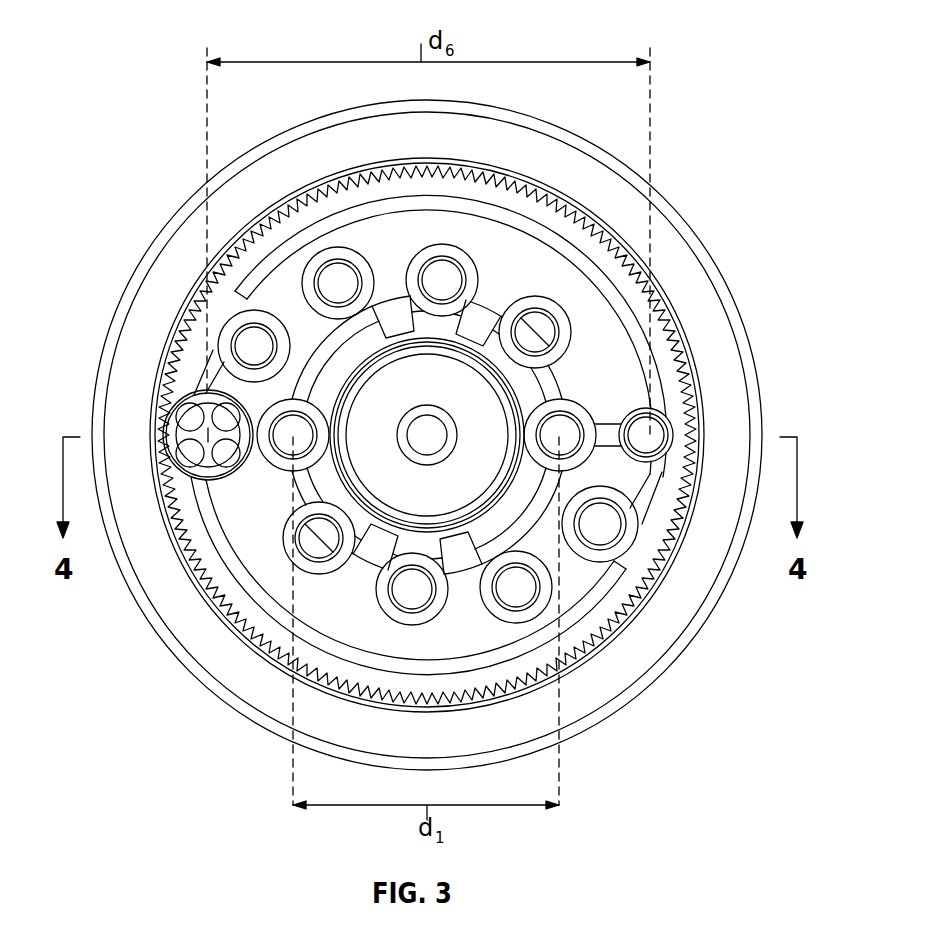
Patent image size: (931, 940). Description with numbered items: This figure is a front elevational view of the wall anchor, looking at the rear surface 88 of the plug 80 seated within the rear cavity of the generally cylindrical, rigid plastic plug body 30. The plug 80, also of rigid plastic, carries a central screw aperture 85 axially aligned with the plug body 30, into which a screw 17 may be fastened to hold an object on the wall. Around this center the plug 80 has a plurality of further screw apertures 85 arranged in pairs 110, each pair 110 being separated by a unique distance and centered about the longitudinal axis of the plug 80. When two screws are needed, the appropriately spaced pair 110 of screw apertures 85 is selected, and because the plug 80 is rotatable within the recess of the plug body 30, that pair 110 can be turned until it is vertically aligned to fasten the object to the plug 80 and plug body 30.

The screw 17 is at (205, 430).
The plug body 30 is at (668, 213).
The plug 80 is at (568, 197).
The screw apertures 85 is at (733, 618).
The rear surface 88 is at (398, 540).
The pairs of screw apertures 110 is at (427, 437).